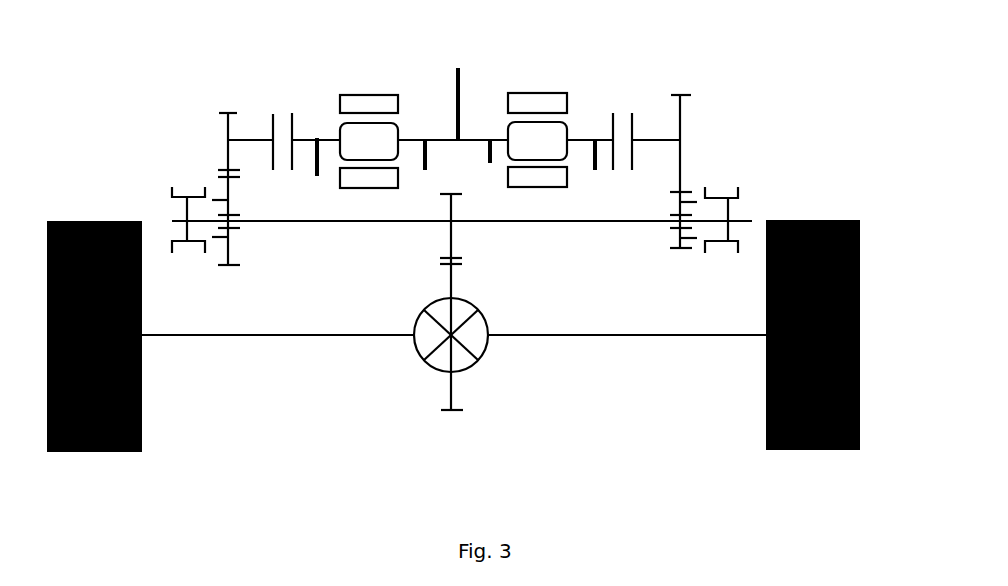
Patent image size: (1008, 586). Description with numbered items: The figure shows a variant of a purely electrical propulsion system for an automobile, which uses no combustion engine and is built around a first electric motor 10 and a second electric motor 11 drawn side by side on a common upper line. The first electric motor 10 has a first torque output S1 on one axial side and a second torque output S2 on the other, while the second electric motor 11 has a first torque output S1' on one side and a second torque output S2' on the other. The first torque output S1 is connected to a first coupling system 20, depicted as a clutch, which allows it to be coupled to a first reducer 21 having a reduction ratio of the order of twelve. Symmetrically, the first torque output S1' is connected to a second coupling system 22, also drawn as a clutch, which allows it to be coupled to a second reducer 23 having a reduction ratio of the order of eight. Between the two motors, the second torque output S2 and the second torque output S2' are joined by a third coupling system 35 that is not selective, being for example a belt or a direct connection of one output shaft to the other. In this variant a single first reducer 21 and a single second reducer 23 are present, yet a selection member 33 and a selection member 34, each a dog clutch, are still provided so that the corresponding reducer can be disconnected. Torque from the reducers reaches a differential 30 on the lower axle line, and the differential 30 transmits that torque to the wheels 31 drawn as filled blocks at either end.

The first electric motor 10 is at (369, 138).
The second electric motor 11 is at (542, 143).
The first coupling system 20 is at (285, 130).
The first reducer 21 is at (225, 128).
The second coupling system 22 is at (627, 132).
The second reducer 23 is at (682, 153).
The differential 30 is at (473, 337).
The wheels 31 is at (60, 222).
The selection member 33 is at (187, 192).
The selection member 34 is at (717, 190).
The third coupling system 35 is at (452, 90).
The first torque output S1 is at (317, 169).
The second torque output S2 is at (422, 168).
The second torque output S2' is at (493, 167).
The first torque output S1' is at (588, 166).